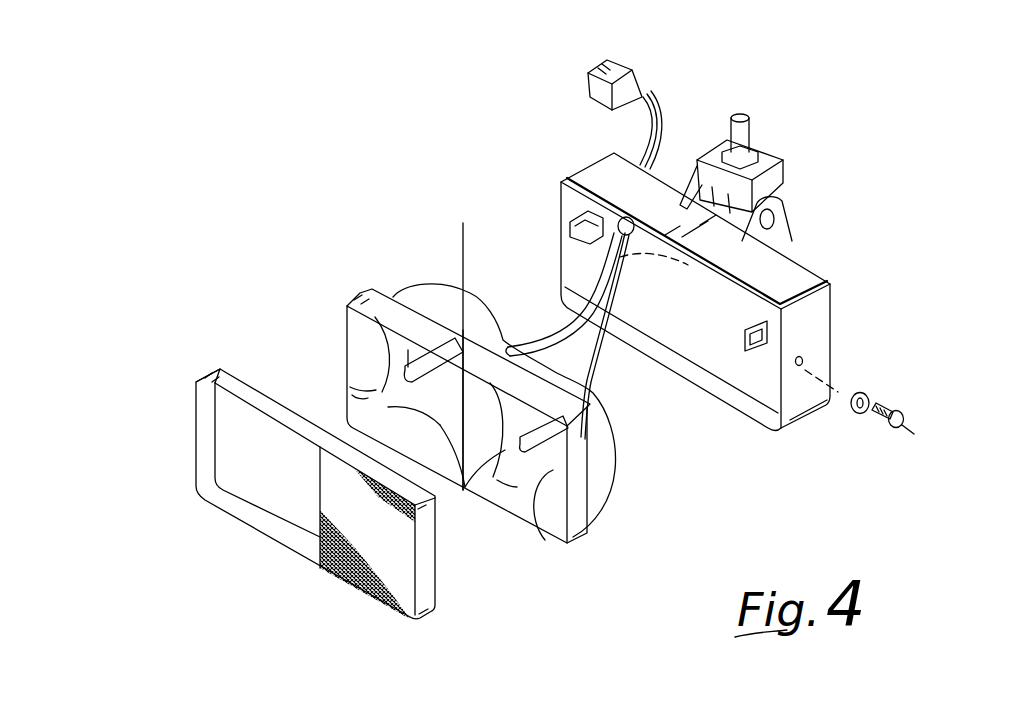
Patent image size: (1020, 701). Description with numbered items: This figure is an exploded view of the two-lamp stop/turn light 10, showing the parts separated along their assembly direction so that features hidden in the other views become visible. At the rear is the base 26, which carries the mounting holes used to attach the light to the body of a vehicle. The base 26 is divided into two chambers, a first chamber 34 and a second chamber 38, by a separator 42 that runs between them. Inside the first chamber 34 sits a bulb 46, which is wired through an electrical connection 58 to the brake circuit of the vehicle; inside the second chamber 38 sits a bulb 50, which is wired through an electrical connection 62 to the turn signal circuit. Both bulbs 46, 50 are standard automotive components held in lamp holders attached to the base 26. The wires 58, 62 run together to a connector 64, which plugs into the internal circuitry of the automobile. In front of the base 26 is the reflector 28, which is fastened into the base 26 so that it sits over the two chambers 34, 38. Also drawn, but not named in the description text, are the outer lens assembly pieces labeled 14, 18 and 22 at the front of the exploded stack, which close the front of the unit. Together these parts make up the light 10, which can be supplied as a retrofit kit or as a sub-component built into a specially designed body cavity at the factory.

The two-lamp stop/turn light 10 is at (344, 176).
The lens unit 14 is at (178, 405).
The lens 18 is at (423, 541).
The lens panel 22 is at (242, 490).
The base 26 is at (820, 327).
The reflector 28 is at (573, 502).
The first chamber 34 is at (535, 505).
The second chamber 38 is at (347, 377).
The separator 42 is at (463, 330).
The bulb 46 is at (603, 402).
The bulb 50 is at (408, 350).
The electrical connection 58 is at (660, 110).
The electrical connection 62 is at (633, 137).
The connector 64 is at (587, 85).